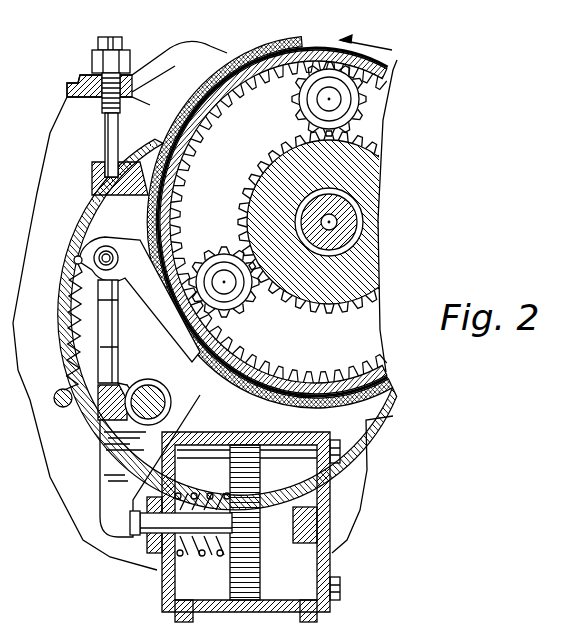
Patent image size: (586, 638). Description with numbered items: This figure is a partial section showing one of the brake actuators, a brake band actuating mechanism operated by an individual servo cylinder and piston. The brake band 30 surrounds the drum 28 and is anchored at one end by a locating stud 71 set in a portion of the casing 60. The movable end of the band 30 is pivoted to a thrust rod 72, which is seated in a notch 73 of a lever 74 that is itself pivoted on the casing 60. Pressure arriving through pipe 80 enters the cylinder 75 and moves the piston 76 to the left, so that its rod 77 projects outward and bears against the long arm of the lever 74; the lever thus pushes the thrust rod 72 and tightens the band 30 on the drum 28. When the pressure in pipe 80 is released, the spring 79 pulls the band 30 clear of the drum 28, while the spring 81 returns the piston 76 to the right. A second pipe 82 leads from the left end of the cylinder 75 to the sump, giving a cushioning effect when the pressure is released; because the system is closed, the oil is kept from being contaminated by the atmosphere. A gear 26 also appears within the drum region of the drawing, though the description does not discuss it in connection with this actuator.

The pinion gear 26 is at (236, 88).
The drum 28 is at (383, 378).
The brake band 30 is at (386, 397).
The casing 60 is at (178, 77).
The locating stud 71 is at (104, 129).
The thrust rod 72 is at (112, 306).
The notch 73 is at (133, 390).
The lever 74 is at (108, 445).
The cylinder 75 is at (312, 484).
The piston 76 is at (248, 577).
The rod 77 is at (140, 537).
The spring 79 is at (62, 336).
The pipe 80 is at (315, 614).
The spring 81 is at (210, 492).
The pipe 82 is at (176, 618).